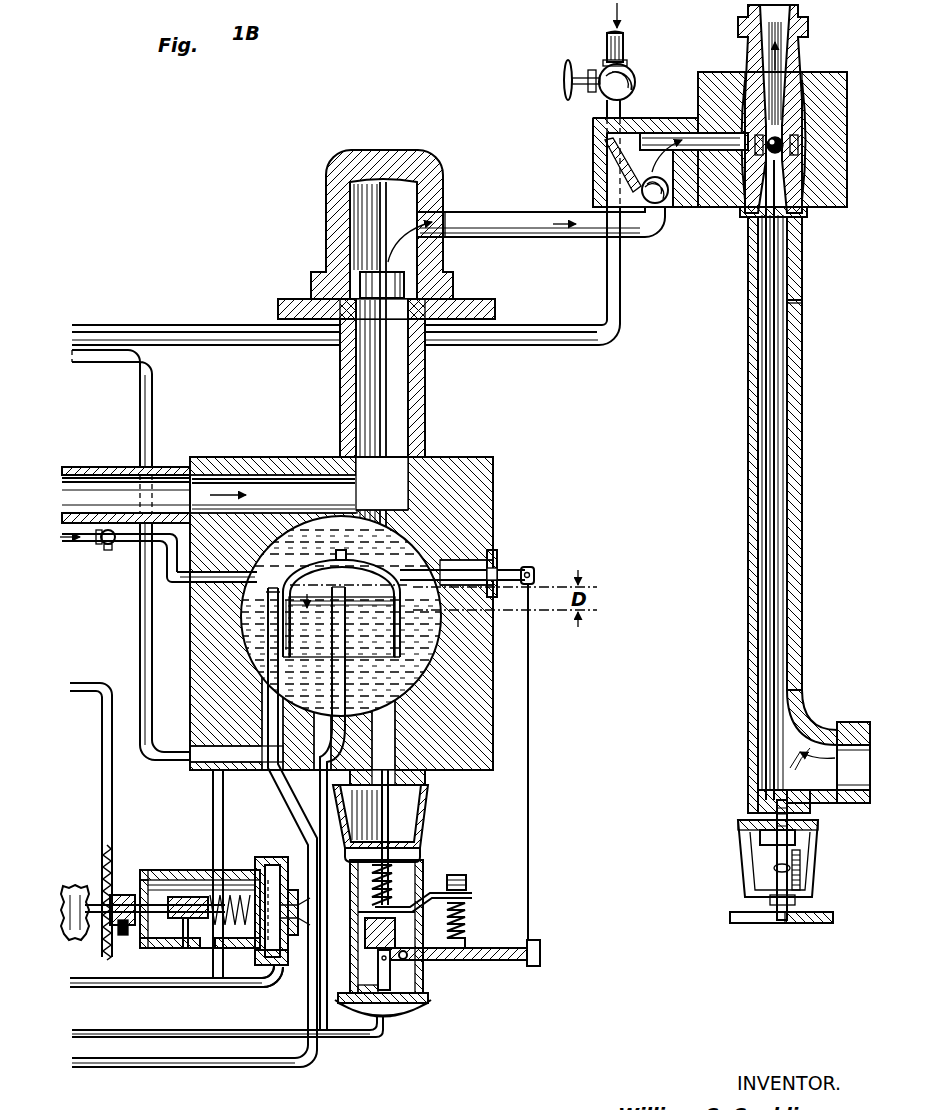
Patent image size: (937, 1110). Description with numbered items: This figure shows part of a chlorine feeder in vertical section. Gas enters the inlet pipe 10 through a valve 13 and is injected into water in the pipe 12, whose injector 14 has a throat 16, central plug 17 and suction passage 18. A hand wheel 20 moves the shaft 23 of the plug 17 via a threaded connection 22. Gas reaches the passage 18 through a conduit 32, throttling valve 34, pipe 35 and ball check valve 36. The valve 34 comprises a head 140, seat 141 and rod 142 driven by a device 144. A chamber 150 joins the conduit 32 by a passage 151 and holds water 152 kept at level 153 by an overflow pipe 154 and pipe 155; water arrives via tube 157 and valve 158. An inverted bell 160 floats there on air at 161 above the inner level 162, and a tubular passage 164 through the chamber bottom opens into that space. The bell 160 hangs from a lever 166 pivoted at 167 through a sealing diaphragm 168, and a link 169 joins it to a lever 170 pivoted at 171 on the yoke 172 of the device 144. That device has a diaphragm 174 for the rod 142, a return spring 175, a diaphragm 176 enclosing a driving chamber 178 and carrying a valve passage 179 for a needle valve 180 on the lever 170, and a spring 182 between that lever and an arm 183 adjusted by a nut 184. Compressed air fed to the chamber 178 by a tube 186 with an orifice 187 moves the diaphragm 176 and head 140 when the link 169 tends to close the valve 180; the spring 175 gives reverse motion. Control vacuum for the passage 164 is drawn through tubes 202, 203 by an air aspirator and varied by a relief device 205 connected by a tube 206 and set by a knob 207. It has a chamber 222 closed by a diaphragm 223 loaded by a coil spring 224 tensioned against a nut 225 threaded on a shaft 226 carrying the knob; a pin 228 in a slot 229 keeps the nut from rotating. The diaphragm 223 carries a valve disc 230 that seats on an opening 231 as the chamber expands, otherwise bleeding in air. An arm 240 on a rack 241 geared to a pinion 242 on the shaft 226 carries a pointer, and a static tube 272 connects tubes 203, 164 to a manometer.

The inlet pipe 10 is at (606, 273).
The water pipe 12 is at (803, 457).
The valve 13 is at (562, 76).
The injector 14 is at (734, 220).
The throat 16 is at (806, 214).
The central plug 17 is at (783, 138).
The passage 18 is at (715, 128).
The hand wheel 20 is at (800, 925).
The threaded connection 22 is at (797, 814).
The shaft 23 is at (778, 380).
The conduit 32 is at (98, 470).
The throttling valve 34 is at (308, 276).
The pipe 35 is at (497, 198).
The ball check valve 36 is at (641, 186).
The valve head 140 is at (405, 286).
The valve seat 141 is at (428, 303).
The rod 142 is at (396, 428).
The valve adjusting device 144 is at (394, 876).
The chamber 150 is at (400, 545).
The passage 151 is at (205, 518).
The body of water 152 is at (425, 650).
The constant level 153 is at (298, 520).
The overflow pipe 154 is at (268, 648).
The pipe 155 is at (92, 1069).
The tube 157 is at (181, 586).
The shut-off valve 158 is at (113, 548).
The bell 160 is at (312, 560).
The air space 161 is at (282, 584).
The level 162 is at (351, 615).
The tubular passage 164 is at (386, 708).
The lever 166 is at (473, 583).
The pivot 167 is at (504, 573).
The flexible diaphragm 168 is at (489, 566).
The link 169 is at (531, 774).
The lever 170 is at (513, 940).
The pivot 171 is at (408, 957).
The yoke 172 is at (375, 931).
The sealing diaphragm 174 is at (393, 778).
The return spring 175 is at (411, 858).
The diaphragm 176 is at (422, 1001).
The driving chamber 178 is at (412, 1020).
The valve passage 179 is at (376, 990).
The needle valve element 180 is at (392, 979).
The spring 182 is at (466, 918).
The arm 183 is at (431, 893).
The nut 184 is at (468, 884).
The tube 186 is at (185, 1038).
The orifice 187 is at (390, 1032).
The tube 202 is at (120, 988).
The tube 203 is at (212, 782).
The pressure regulating device 205 is at (146, 869).
The tube 206 is at (242, 988).
The knob 207 is at (80, 884).
The chamber 222 is at (280, 857).
The flexible diaphragm 223 is at (265, 870).
The coil spring 224 is at (201, 870).
The traveling nut 225 is at (179, 896).
The shaft 226 is at (124, 893).
The lateral pin 228 is at (188, 949).
The longitudinal slot 229 is at (162, 949).
The valve disc 230 is at (300, 913).
The seat 231 is at (258, 952).
The arm 240 is at (96, 673).
The rack 241 is at (105, 846).
The pinion 242 is at (128, 938).
The static tube 272 is at (80, 360).